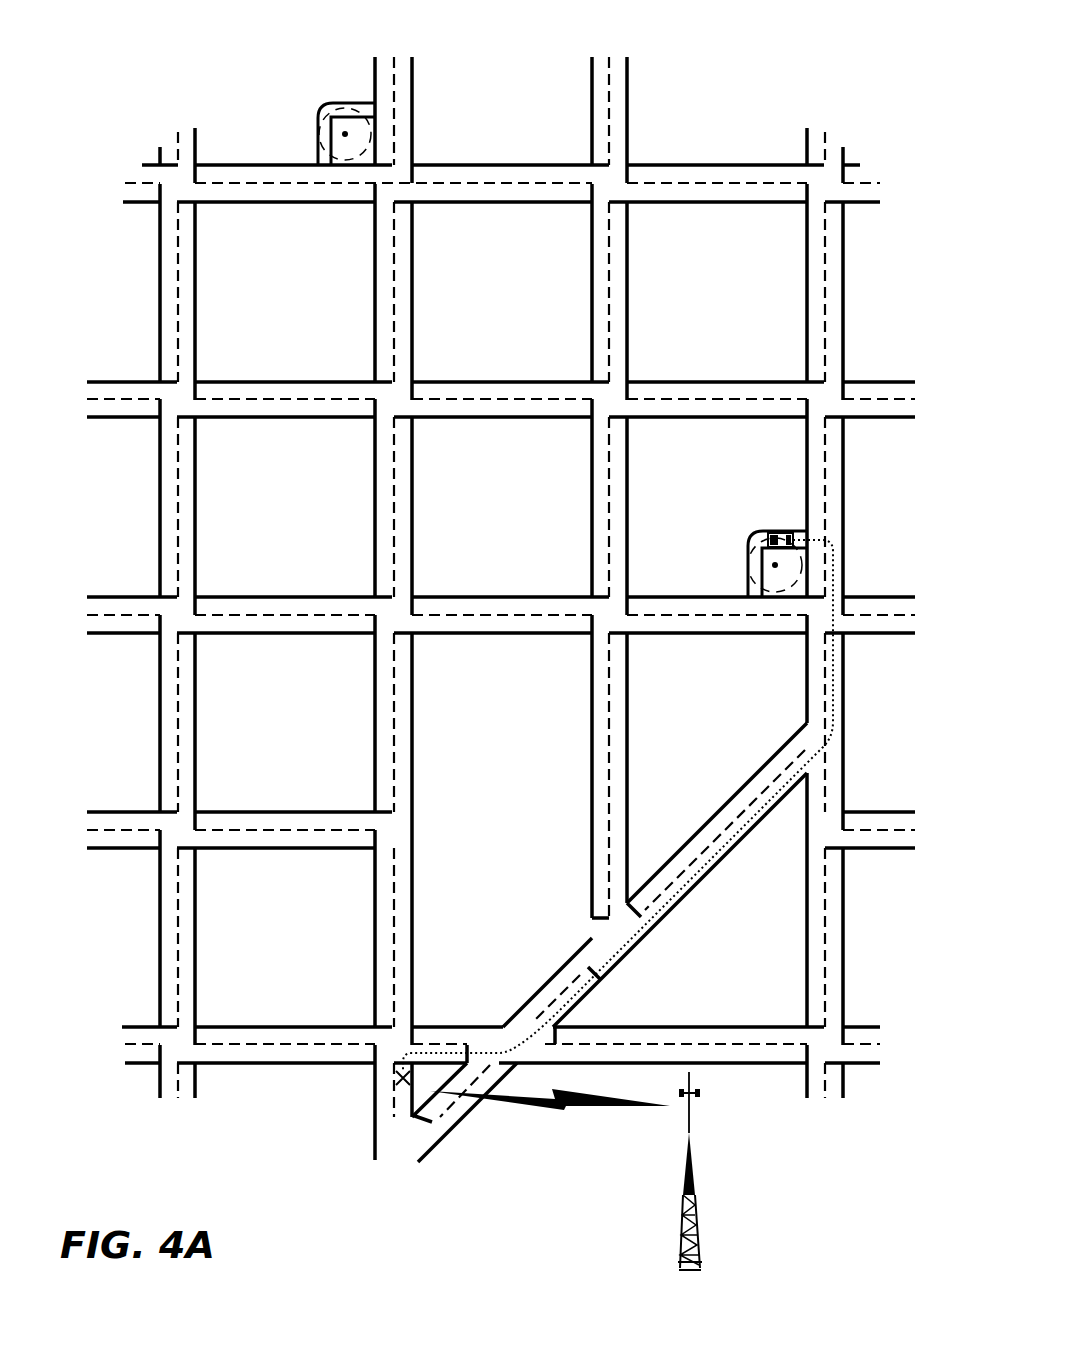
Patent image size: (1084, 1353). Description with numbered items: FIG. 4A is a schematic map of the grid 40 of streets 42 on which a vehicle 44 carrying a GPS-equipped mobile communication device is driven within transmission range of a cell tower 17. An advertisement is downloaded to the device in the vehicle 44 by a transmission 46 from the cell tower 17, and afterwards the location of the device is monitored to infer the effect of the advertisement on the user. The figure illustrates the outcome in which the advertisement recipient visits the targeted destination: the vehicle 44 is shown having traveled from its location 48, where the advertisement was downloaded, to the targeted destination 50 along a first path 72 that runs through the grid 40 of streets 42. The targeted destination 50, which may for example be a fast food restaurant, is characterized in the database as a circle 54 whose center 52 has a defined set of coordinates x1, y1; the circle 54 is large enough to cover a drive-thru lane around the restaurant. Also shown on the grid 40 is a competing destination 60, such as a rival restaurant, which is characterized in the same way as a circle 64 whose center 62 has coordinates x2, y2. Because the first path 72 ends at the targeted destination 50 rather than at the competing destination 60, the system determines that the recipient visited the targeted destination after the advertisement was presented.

The cell tower 17 is at (692, 1165).
The grid 40 is at (742, 68).
The streets 42 is at (874, 388).
The vehicle 44 is at (795, 530).
The transmission 46 is at (623, 1103).
The location 48 is at (395, 1086).
The targeted destination 50 is at (803, 587).
The center 52 is at (775, 565).
The circle 54 is at (760, 587).
The competing destination 60 is at (372, 155).
The center 62 is at (345, 134).
The circle 64 is at (318, 155).
The first path 72 is at (625, 948).